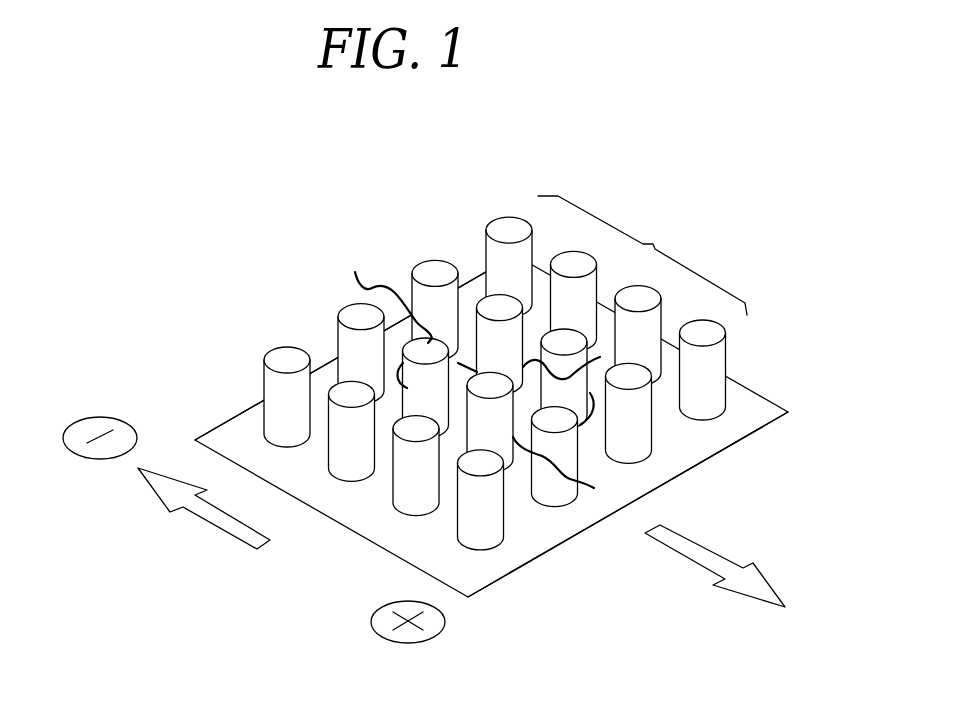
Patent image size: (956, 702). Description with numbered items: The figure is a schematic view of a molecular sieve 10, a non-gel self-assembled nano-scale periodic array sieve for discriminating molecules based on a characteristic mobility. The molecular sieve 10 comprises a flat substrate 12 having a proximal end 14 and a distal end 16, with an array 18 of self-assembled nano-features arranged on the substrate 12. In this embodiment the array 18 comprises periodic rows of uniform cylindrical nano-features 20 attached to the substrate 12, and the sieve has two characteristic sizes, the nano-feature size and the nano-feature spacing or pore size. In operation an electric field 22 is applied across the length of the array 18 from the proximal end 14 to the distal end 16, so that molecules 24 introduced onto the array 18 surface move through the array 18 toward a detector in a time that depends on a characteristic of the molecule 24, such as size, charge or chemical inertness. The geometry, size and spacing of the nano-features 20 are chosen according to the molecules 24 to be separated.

The molecular sieve 10 is at (629, 137).
The substrate 12 is at (748, 412).
The proximal end 14 is at (235, 418).
The distal end 16 is at (543, 555).
The array 18 is at (642, 255).
The nano-features 20 is at (352, 393).
The electric field 22 is at (222, 533).
The molecules 24 is at (355, 272).